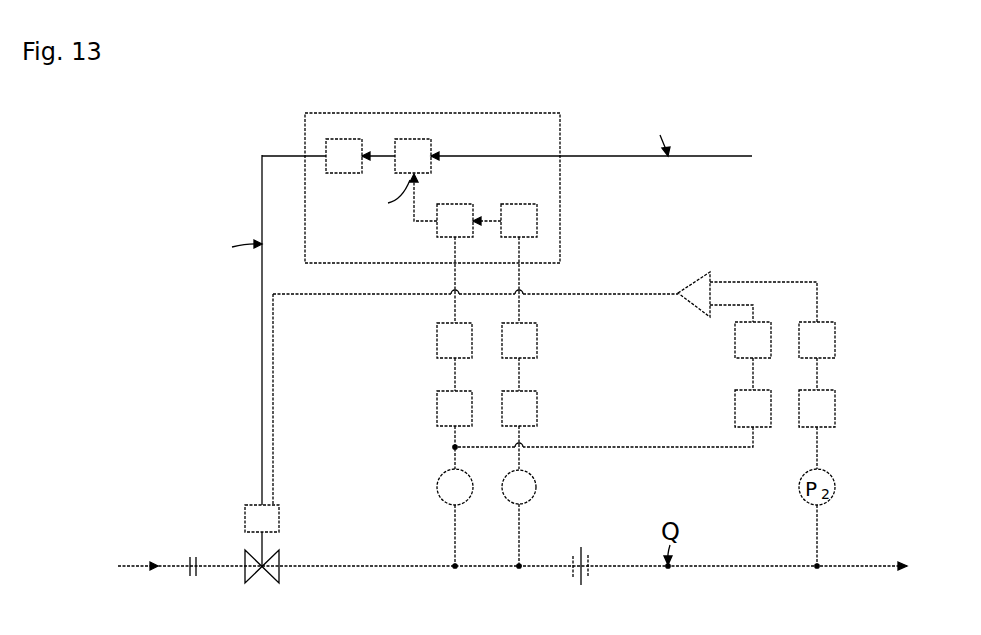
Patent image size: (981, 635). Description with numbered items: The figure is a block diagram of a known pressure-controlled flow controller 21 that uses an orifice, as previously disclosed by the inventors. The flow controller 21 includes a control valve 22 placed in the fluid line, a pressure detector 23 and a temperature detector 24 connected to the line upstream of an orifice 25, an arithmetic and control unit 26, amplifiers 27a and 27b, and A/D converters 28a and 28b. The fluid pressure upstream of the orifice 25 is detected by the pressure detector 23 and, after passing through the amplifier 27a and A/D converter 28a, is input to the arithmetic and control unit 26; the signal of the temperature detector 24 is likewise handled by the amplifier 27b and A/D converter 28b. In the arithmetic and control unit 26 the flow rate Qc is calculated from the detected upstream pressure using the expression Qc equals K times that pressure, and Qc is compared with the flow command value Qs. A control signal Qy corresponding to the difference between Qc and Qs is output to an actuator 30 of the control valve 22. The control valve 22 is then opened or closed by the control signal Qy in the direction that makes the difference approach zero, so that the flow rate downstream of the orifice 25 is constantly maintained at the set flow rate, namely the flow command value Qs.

The flow controller 21 is at (187, 132).
The control valve 22 is at (280, 576).
The pressure detector 23 is at (437, 487).
The temperature detector 24 is at (537, 485).
The orifice 25 is at (583, 578).
The arithmetic and control unit 26 is at (494, 112).
The amplifier 27a is at (445, 410).
The amplifier 27b is at (528, 410).
The A/D converter 28a is at (445, 342).
The A/D converter 28b is at (528, 342).
The actuator 30 is at (272, 518).